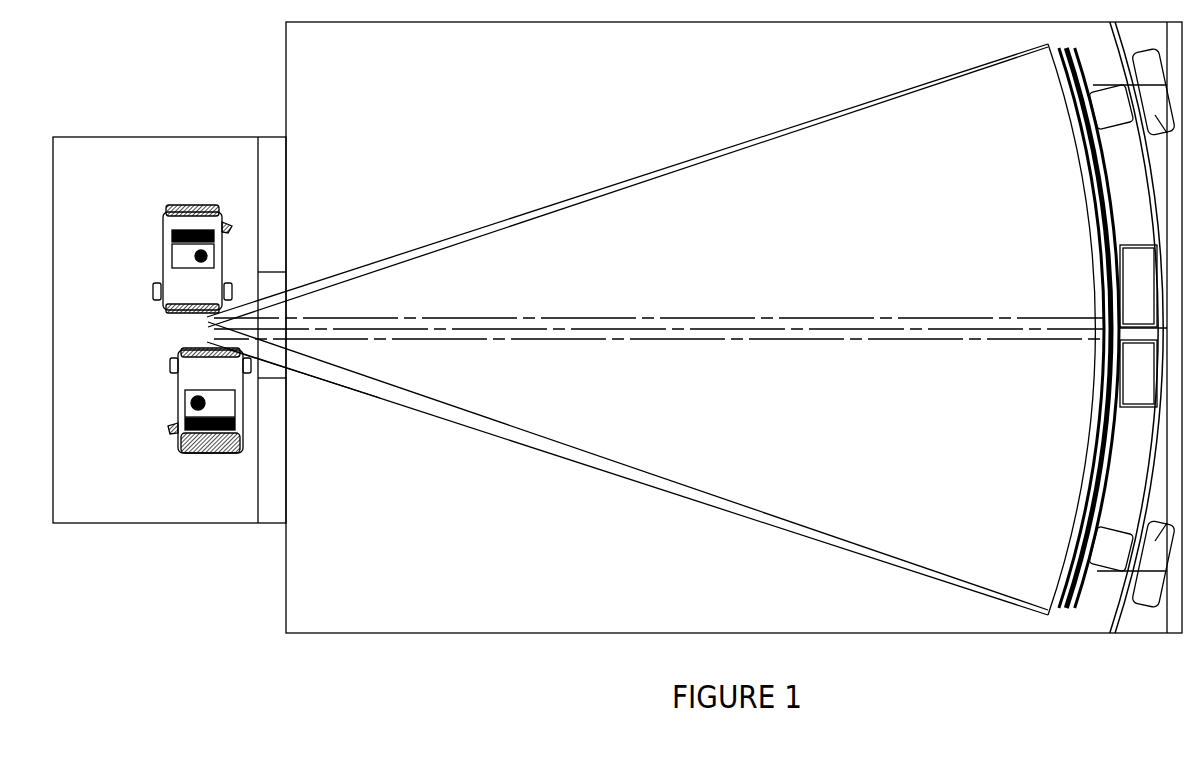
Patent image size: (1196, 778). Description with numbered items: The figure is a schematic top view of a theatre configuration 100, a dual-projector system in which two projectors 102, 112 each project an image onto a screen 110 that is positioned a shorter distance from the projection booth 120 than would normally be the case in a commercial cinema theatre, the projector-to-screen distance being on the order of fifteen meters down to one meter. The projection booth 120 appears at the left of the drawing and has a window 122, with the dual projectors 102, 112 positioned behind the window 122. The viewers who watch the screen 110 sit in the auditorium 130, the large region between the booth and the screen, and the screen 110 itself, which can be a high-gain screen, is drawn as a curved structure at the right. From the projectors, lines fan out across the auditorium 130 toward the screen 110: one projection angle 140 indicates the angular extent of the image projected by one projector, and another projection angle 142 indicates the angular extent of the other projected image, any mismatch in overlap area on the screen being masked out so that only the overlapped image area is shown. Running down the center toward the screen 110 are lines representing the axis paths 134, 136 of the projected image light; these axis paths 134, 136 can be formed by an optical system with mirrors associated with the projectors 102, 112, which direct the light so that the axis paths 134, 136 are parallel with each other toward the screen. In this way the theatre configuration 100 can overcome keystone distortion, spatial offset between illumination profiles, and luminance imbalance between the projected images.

The theatre configuration 100 is at (137, 68).
The projection booth 120 is at (169, 330).
The auditorium 130 is at (734, 327).
The projector 102 is at (192, 259).
The projector 112 is at (209, 400).
The projection angle 140 is at (557, 203).
The projection angle 142 is at (452, 246).
The window 122 is at (289, 372).
The axis path 134 is at (852, 318).
The axis path 136 is at (852, 340).
The screen 110 is at (1062, 550).